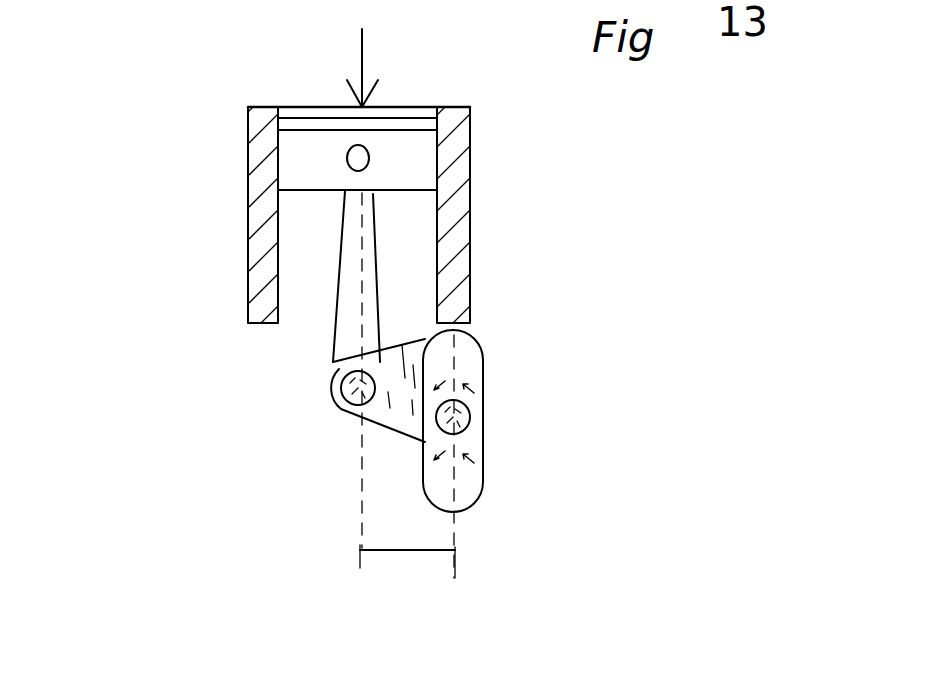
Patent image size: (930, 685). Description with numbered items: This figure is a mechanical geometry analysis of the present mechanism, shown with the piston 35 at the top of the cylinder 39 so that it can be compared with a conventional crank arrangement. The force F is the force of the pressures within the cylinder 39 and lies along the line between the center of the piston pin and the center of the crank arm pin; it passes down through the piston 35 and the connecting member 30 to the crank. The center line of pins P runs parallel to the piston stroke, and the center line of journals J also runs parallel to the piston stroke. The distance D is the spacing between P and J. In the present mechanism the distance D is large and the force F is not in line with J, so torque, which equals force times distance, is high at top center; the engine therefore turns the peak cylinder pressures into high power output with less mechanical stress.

The piston 35 is at (295, 154).
The cylinder 39 is at (265, 232).
The connecting rod and crank web 30 is at (380, 363).
The force F is at (362, 40).
The center line of journals J is at (457, 366).
The center line of pins P is at (362, 475).
The distance D is at (407, 550).